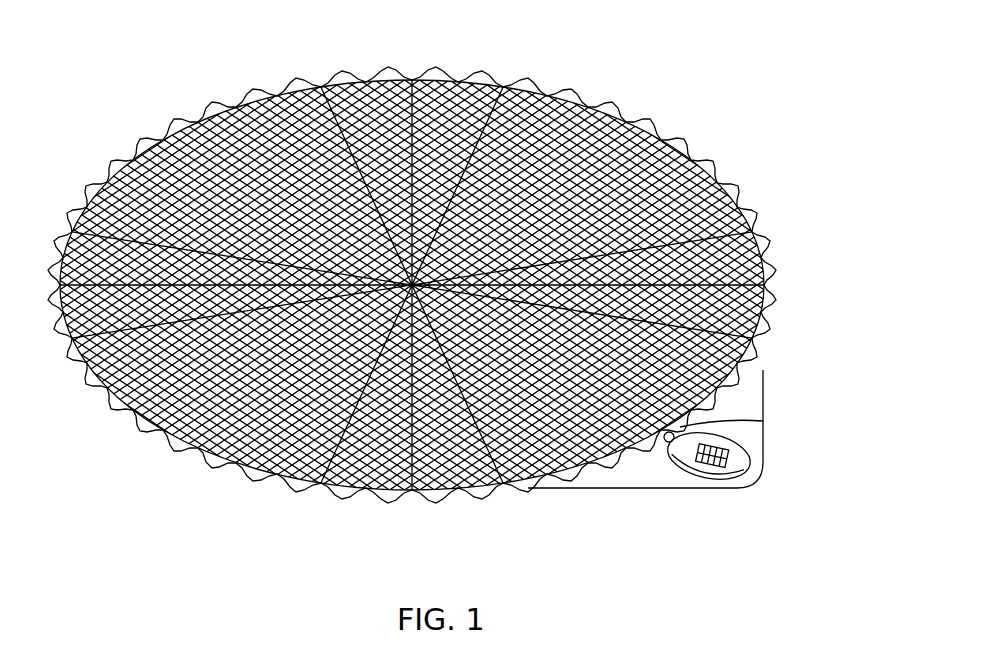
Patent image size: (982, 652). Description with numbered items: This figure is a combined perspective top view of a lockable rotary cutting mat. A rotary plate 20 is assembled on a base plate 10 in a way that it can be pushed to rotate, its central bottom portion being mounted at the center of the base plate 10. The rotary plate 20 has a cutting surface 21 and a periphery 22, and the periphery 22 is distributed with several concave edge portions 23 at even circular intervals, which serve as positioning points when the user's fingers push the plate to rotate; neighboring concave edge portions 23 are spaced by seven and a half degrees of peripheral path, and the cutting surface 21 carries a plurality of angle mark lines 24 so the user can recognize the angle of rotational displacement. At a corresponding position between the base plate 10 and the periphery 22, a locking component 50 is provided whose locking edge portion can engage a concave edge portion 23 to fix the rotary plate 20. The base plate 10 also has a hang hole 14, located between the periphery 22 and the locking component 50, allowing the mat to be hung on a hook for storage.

The base plate 10 is at (776, 392).
The hang hole 14 is at (763, 421).
The rotary plate 20 is at (457, 281).
The cutting surface 21 is at (138, 138).
The periphery 22 is at (204, 108).
The concave edge portion 23 is at (318, 85).
The angle mark lines 24 is at (428, 105).
The locking component 50 is at (750, 449).